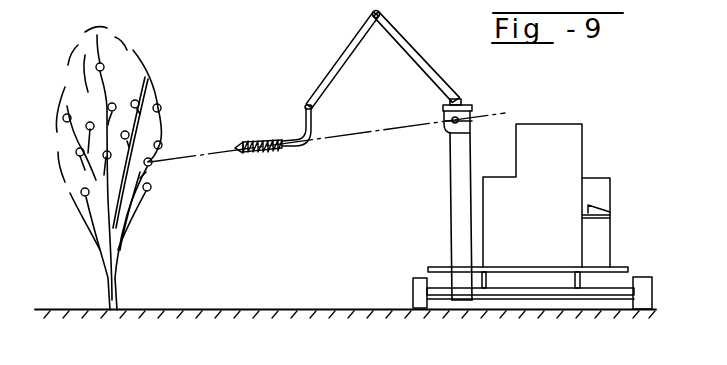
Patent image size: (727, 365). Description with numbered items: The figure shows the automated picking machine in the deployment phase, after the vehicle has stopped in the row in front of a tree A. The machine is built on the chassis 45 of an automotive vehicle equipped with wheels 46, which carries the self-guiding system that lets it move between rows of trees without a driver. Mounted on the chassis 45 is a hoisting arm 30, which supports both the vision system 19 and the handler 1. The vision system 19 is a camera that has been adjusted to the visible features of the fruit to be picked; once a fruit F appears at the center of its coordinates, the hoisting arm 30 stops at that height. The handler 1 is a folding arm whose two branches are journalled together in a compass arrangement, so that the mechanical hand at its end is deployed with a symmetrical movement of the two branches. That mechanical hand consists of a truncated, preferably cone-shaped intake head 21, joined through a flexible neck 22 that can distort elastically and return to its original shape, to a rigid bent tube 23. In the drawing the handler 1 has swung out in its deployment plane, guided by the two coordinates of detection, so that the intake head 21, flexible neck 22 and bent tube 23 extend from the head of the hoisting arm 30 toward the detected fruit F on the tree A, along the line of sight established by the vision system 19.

The handler 1 is at (466, 86).
The vision system 19 is at (445, 123).
The intake head 21 is at (235, 145).
The flexible neck 22 is at (262, 141).
The bent tube 23 is at (304, 134).
The hoisting arm 30 is at (455, 205).
The chassis 45 is at (546, 268).
The wheels 46 is at (419, 299).
The tree A is at (120, 208).
The fruit F is at (153, 166).